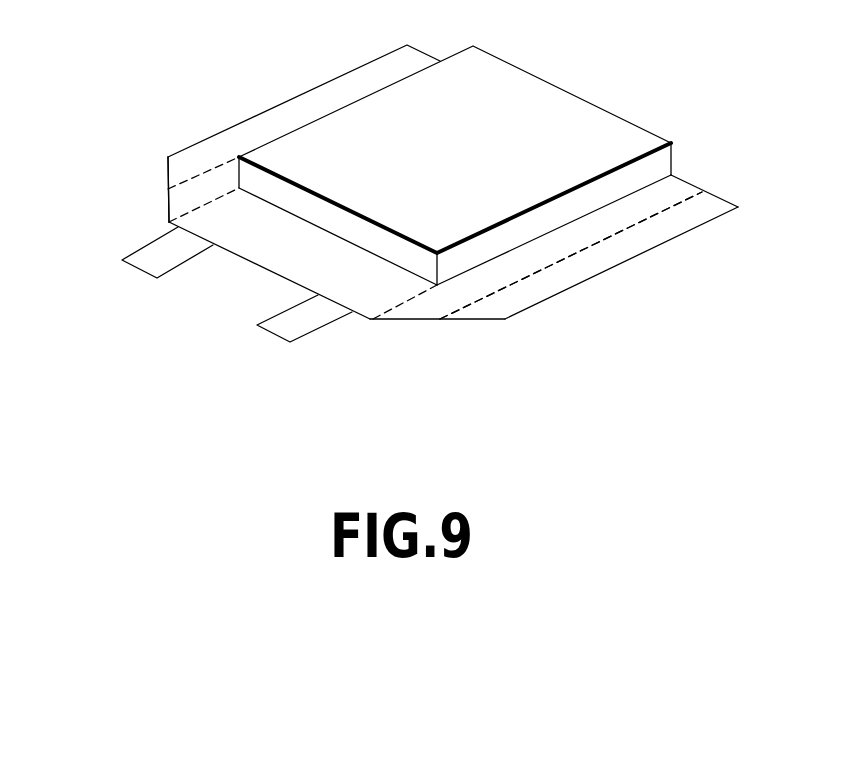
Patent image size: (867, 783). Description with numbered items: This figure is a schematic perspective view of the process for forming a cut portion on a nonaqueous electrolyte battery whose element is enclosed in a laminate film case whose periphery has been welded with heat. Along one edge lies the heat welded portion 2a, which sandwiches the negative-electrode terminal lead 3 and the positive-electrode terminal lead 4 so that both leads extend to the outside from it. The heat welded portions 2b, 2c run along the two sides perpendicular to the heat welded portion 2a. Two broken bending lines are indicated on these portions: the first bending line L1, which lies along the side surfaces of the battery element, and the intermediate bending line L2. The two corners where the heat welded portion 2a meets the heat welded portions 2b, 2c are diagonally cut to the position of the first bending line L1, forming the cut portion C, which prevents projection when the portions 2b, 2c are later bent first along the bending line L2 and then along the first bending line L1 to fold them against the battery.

The heat welded portion 2a is at (260, 242).
The heat welded portion 2b is at (303, 112).
The heat welded portion 2c is at (595, 263).
The negative-electrode terminal lead 3 is at (285, 328).
The positive-electrode terminal lead 4 is at (150, 263).
The cut portion C is at (168, 162).
The first bending line L1 is at (170, 223).
The bending line L2 is at (170, 190).